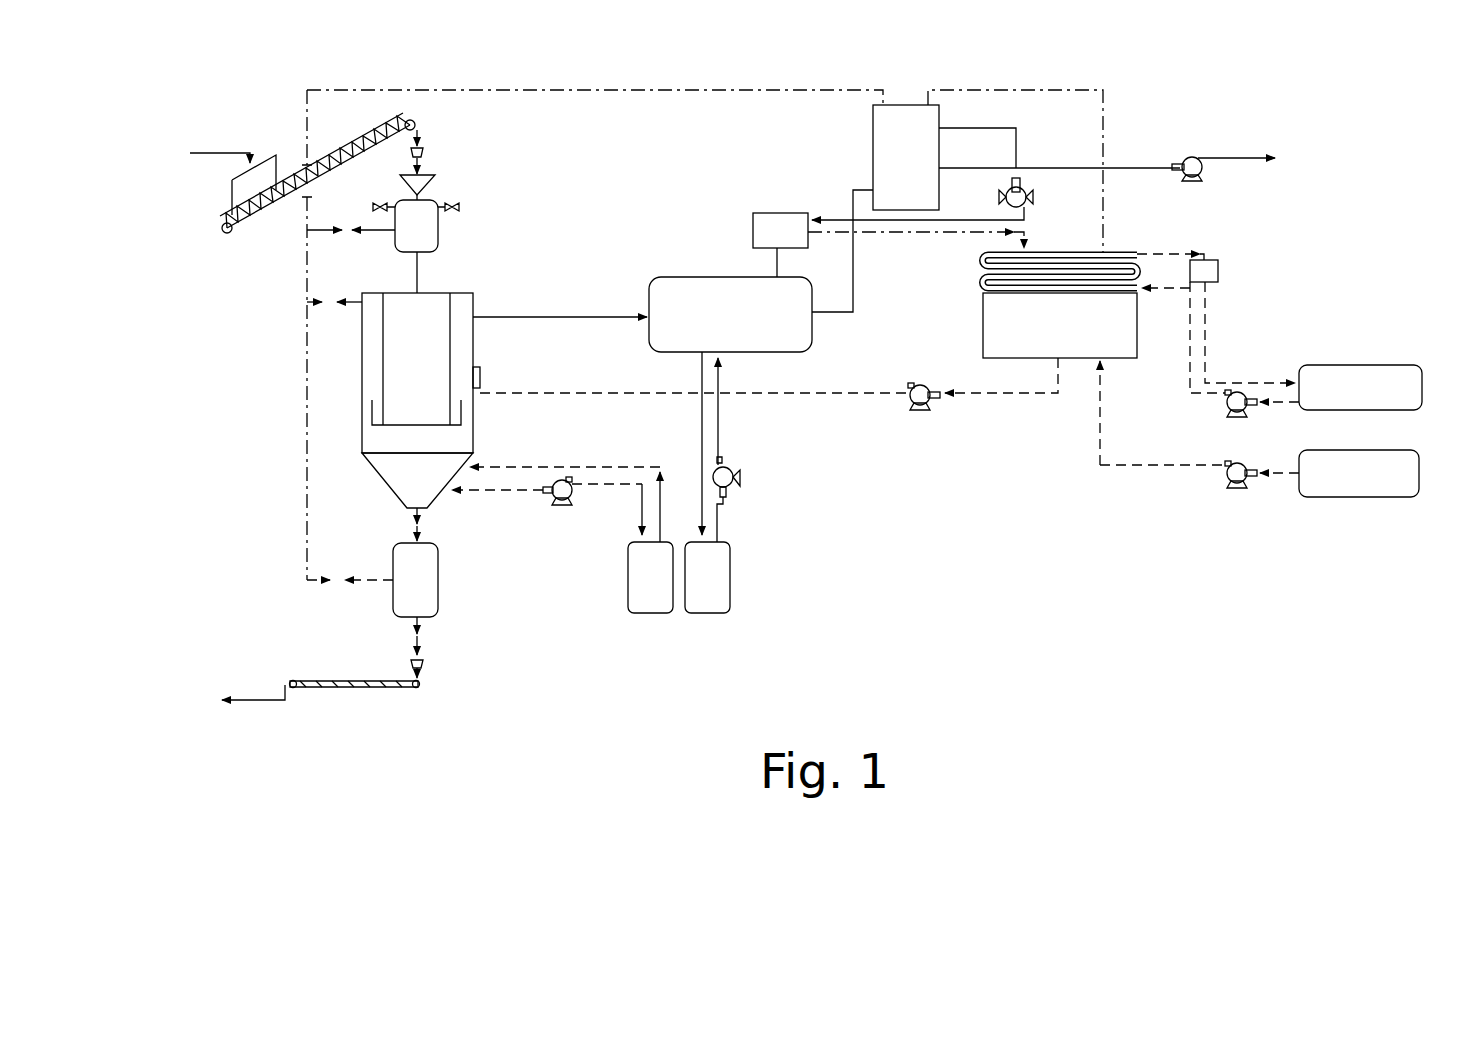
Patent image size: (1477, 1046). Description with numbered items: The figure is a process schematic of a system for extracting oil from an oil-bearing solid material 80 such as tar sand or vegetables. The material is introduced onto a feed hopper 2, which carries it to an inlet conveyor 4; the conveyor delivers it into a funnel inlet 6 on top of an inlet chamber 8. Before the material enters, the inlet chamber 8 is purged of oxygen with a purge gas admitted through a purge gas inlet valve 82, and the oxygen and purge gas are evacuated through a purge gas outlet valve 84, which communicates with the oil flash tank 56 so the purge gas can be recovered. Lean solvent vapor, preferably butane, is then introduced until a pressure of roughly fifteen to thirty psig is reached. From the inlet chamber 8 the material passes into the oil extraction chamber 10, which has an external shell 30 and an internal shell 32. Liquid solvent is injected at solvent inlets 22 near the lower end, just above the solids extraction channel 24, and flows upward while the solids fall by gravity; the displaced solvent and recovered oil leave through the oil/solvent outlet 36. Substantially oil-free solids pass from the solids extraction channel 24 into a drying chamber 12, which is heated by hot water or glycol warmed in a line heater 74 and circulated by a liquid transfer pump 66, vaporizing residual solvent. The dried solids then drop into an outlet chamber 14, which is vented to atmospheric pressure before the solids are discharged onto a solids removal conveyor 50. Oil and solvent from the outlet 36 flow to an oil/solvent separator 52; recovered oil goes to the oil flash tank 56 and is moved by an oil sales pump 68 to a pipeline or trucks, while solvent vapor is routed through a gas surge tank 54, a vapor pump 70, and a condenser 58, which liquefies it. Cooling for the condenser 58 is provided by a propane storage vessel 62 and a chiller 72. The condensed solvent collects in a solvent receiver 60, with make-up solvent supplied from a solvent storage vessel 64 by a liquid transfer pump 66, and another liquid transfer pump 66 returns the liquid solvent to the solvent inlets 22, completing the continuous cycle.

The feed hopper 2 is at (232, 198).
The inlet conveyor 4 is at (362, 148).
The funnel inlet 6 is at (438, 185).
The inlet chamber 8 is at (440, 231).
The oil extraction chamber 10 is at (475, 298).
The drying chamber 12 is at (378, 479).
The outlet chamber 14 is at (438, 578).
The solvent inlet 22 is at (480, 395).
The solids extraction channel 24 is at (372, 417).
The extraction chamber external shell 30 is at (362, 396).
The extraction chamber internal shell 32 is at (383, 350).
The oil/solvent outlet 36 is at (477, 320).
The solids removal conveyor 50 is at (355, 690).
The oil/solvent separator 52 is at (690, 277).
The gas surge tank 54 is at (780, 213).
The oil flash tank 56 is at (905, 105).
The condenser 58 is at (1125, 252).
The solvent receiver 60 is at (983, 320).
The propane storage vessel 62 is at (1353, 365).
The solvent storage vessel 64 is at (1405, 450).
The liquid transfer pump 66 is at (922, 410).
The oil sales pump 68 is at (1200, 172).
The vapor pump (compressor) 70 is at (1028, 195).
The chiller 72 is at (1218, 270).
The line heater 74 is at (648, 613).
The oil-bearing solid material 80 is at (210, 92).
The purge gas inlet valve 82 is at (460, 208).
The purge gas outlet valve 84 is at (374, 207).